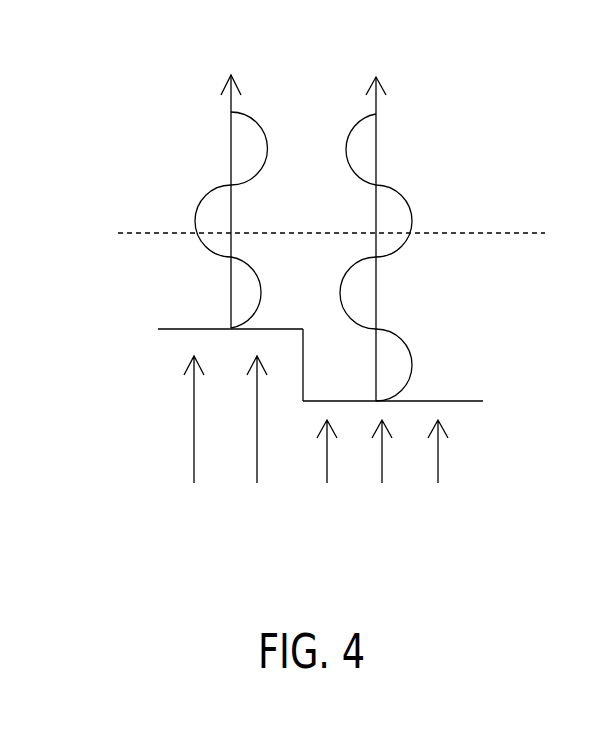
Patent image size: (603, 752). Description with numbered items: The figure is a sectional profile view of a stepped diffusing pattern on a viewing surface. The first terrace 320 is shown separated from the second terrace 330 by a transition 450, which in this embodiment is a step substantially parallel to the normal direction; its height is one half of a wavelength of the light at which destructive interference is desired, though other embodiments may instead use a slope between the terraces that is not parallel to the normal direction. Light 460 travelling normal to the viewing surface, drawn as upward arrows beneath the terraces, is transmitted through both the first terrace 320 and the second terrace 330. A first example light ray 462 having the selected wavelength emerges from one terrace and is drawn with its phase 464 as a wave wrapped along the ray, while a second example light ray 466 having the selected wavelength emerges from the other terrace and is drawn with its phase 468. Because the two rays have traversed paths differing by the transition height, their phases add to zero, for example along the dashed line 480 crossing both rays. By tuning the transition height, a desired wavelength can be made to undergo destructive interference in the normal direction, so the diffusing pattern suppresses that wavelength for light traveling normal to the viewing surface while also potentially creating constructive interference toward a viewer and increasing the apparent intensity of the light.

The first terrace 320 is at (472, 404).
The second terrace 330 is at (178, 332).
The transition 450 is at (298, 388).
The light 460 is at (194, 432).
The first example light ray 462 is at (376, 147).
The phase 464 is at (407, 203).
The second example light ray 466 is at (231, 153).
The phase 468 is at (204, 197).
The dashed line 480 is at (510, 233).